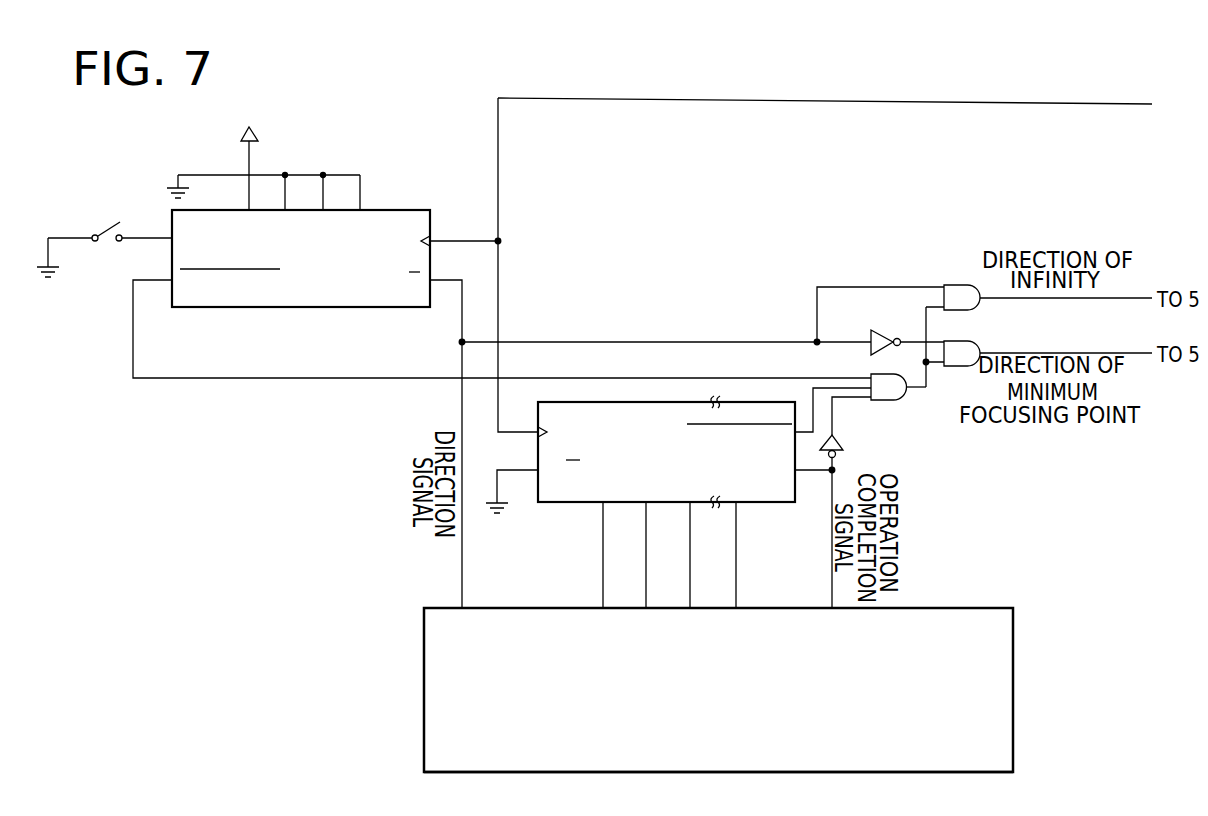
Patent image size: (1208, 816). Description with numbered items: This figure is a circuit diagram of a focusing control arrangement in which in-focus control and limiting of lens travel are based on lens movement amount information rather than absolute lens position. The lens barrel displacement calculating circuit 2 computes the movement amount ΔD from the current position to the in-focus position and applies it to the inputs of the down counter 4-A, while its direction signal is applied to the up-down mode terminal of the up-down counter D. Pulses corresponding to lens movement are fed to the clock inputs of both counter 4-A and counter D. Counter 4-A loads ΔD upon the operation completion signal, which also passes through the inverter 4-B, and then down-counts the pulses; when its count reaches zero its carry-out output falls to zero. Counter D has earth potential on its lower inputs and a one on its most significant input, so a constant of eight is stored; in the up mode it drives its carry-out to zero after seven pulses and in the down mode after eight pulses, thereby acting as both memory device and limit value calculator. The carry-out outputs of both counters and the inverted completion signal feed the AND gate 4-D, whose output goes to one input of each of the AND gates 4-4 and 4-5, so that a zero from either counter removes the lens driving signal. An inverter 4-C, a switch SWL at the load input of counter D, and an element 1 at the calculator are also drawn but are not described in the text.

The lens barrel displacement calculator output 1 is at (543, 757).
The lens barrel displacement calculating circuit 2 is at (972, 617).
The down counter 4-A is at (553, 503).
The inverter 4-B is at (845, 443).
The inverter gate 4-C is at (884, 332).
The AND gate 4-D is at (893, 401).
The AND gate 4-4 is at (950, 284).
The AND gate 4-5 is at (972, 339).
The up-down counter D is at (289, 308).
The switch SWL is at (105, 228).